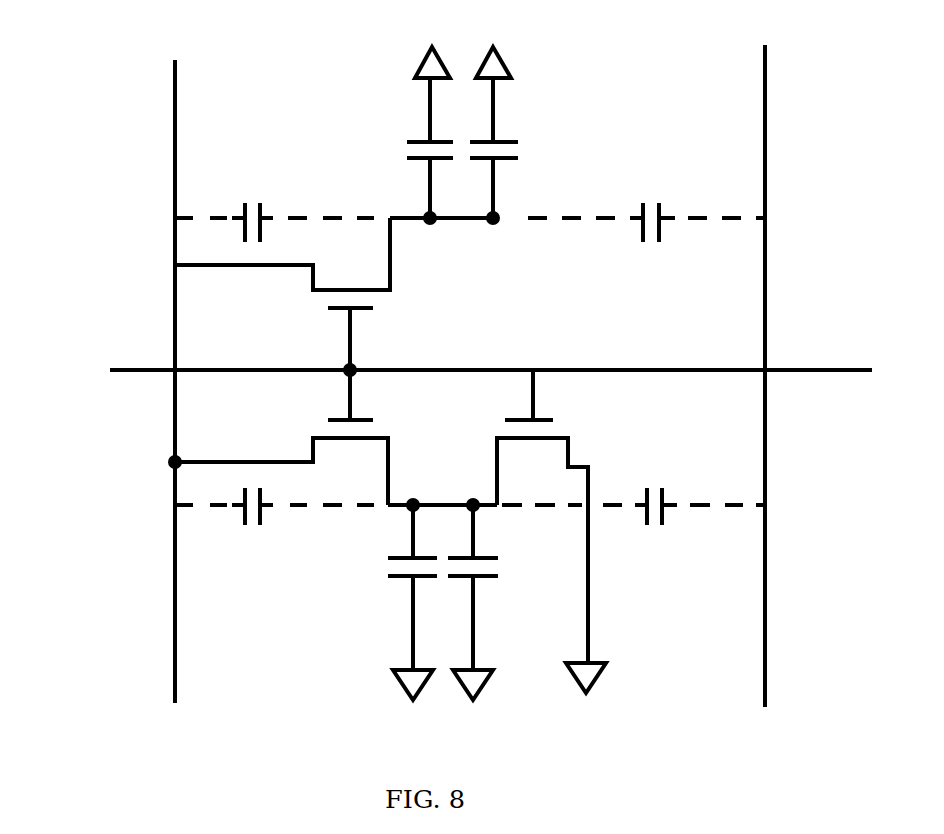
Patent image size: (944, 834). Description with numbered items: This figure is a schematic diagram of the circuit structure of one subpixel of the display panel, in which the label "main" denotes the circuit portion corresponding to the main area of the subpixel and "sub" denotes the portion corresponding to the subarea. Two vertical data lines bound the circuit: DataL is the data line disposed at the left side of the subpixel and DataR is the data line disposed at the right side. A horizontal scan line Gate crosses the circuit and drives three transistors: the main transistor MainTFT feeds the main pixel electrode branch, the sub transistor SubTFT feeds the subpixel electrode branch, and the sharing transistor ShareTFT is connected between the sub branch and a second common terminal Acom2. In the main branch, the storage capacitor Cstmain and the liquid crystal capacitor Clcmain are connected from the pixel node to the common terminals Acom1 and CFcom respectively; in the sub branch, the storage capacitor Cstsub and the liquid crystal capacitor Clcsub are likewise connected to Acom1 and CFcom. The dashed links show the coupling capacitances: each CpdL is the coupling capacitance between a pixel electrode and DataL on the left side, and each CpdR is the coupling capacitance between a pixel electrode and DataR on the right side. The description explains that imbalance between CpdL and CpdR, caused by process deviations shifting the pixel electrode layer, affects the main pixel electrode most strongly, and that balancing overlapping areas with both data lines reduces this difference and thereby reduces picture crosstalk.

The gate line Gate is at (448, 371).
The data line disposed at the left side of the subpixel DataL is at (185, 407).
The data line disposed at the right side of the subpixel DataR is at (785, 403).
The coupling capacitance corresponding to the left side CpdL is at (275, 375).
The coupling capacitance corresponding to the right side CpdR is at (633, 369).
The main thin film transistor MainTFT is at (355, 290).
The sub thin film transistor SubTFT is at (336, 441).
The charge sharing thin film transistor ShareTFT is at (590, 516).
The main storage capacitor Cstmain is at (378, 148).
The main liquid crystal capacitor Clcmain is at (553, 148).
The sub storage capacitor Cstsub is at (367, 587).
The sub liquid crystal capacitor Clcsub is at (513, 587).
The first array common voltage terminal Acom1 is at (403, 379).
The second array common voltage terminal Acom2 is at (614, 698).
The color filter common voltage terminal CFcom is at (520, 380).